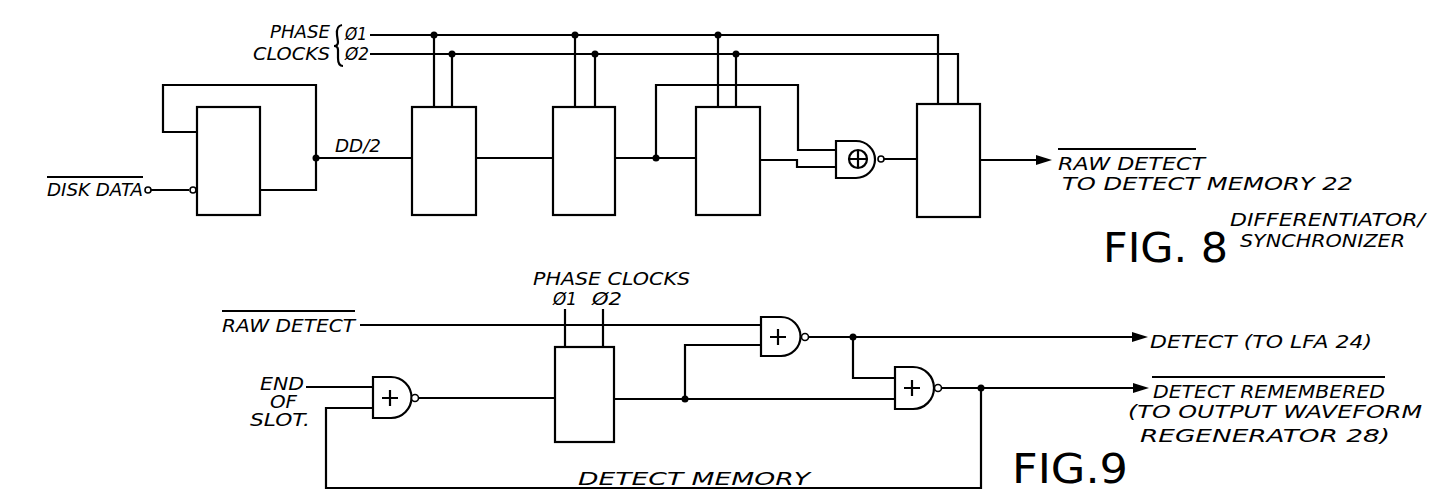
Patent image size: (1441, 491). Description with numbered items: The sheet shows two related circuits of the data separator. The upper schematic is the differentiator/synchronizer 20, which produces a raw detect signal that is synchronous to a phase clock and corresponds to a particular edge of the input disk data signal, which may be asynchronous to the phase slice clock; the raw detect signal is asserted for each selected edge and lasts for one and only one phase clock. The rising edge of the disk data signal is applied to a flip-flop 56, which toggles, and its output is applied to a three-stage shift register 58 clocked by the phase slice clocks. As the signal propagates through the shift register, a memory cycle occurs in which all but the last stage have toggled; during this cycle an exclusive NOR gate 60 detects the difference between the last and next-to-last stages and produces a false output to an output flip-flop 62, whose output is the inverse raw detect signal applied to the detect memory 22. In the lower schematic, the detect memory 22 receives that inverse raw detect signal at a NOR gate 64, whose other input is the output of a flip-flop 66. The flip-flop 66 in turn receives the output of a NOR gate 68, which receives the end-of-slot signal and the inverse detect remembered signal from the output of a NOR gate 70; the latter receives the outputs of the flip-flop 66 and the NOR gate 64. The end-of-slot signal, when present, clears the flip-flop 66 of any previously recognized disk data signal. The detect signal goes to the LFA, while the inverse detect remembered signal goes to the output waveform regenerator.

In FIG. 8, the differentiator/synchronizer 20 is at (1010, 113).
In FIG. 8, the flip-flop 56 is at (200, 216).
In FIG. 8, the three-stage shift register 58 is at (778, 220).
In FIG. 8, the exclusive NOR gate 60 is at (878, 131).
In FIG. 8, the output flip-flop 62 is at (960, 217).
In FIG. 9, the detect memory 22 is at (890, 321).
In FIG. 9, the NOR gate 64 is at (797, 319).
In FIG. 9, the flip-flop 66 is at (568, 442).
In FIG. 9, the NOR gate 68 is at (403, 381).
In FIG. 9, the NOR gate 70 is at (928, 373).